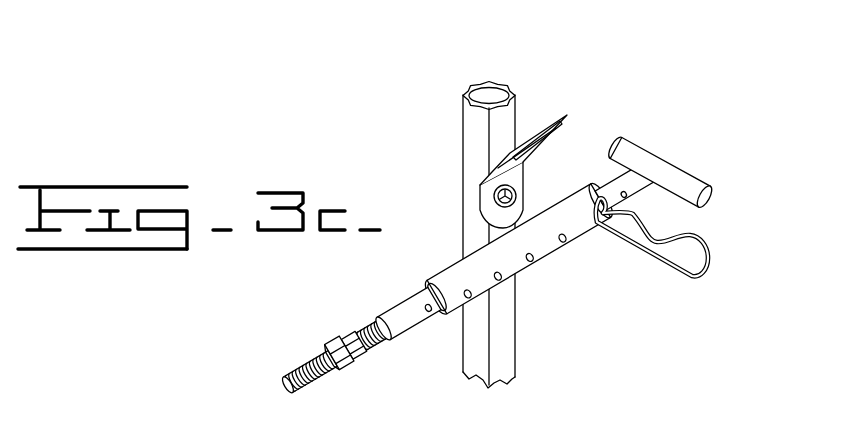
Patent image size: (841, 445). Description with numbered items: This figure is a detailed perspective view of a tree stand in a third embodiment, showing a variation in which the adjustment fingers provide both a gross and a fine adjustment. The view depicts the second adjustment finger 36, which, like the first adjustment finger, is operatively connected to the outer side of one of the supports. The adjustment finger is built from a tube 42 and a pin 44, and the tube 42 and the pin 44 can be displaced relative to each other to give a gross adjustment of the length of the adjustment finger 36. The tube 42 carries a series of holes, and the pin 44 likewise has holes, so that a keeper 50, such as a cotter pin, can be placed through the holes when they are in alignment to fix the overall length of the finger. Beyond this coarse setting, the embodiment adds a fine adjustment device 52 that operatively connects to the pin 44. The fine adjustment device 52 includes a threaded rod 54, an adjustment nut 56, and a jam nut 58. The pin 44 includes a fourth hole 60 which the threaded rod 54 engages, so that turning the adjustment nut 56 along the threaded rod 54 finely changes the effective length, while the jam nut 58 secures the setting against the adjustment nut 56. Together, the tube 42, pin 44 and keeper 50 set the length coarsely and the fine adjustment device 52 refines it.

The second adjustment finger 36 is at (577, 269).
The tube 42 is at (587, 192).
The pin 44 is at (393, 304).
The keeper 50 is at (695, 276).
The fine adjustment device 52 is at (318, 331).
The threaded rod 54 is at (297, 360).
The adjustment nut 56 is at (362, 357).
The jam nut 58 is at (347, 367).
The fourth hole 60 is at (360, 314).